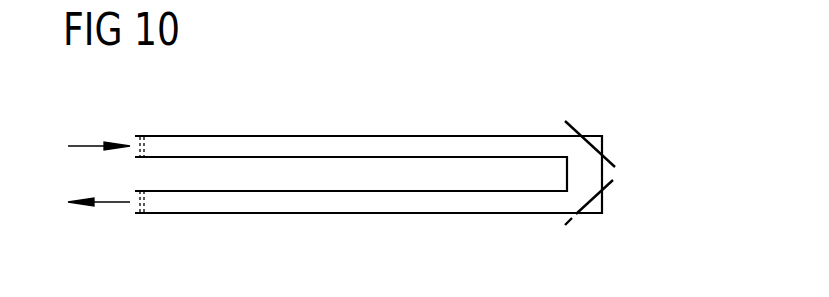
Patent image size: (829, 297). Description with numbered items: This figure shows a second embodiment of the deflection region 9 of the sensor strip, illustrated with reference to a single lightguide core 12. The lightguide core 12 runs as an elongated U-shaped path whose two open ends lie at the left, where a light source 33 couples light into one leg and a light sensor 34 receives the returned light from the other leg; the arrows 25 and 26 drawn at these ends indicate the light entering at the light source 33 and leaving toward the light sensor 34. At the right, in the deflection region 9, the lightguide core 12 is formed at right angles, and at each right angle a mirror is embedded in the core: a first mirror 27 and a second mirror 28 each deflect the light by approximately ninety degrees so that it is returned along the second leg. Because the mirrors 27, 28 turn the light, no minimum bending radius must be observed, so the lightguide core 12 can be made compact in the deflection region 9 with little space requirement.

The deflection region 9 is at (548, 126).
The lightguide core 12 is at (344, 140).
The inflow 25 is at (134, 141).
The outflow 26 is at (134, 206).
The first mirror 27 is at (610, 157).
The second mirror 28 is at (610, 180).
The light source 33 is at (141, 146).
The light sensor 34 is at (140, 210).